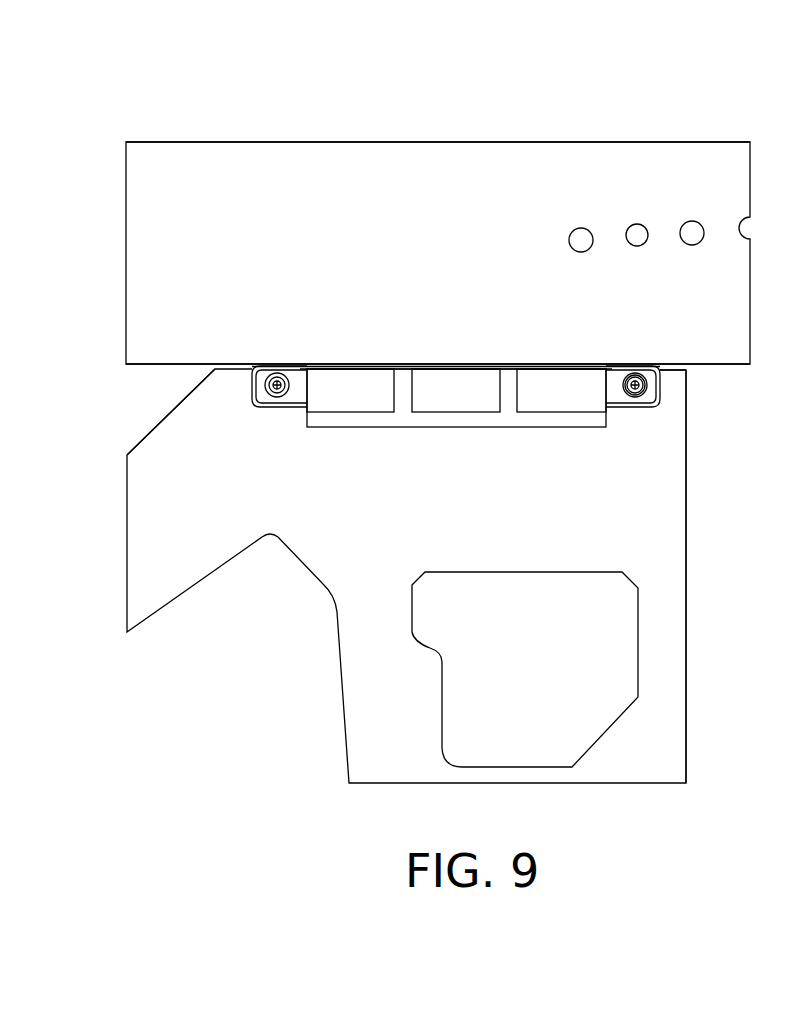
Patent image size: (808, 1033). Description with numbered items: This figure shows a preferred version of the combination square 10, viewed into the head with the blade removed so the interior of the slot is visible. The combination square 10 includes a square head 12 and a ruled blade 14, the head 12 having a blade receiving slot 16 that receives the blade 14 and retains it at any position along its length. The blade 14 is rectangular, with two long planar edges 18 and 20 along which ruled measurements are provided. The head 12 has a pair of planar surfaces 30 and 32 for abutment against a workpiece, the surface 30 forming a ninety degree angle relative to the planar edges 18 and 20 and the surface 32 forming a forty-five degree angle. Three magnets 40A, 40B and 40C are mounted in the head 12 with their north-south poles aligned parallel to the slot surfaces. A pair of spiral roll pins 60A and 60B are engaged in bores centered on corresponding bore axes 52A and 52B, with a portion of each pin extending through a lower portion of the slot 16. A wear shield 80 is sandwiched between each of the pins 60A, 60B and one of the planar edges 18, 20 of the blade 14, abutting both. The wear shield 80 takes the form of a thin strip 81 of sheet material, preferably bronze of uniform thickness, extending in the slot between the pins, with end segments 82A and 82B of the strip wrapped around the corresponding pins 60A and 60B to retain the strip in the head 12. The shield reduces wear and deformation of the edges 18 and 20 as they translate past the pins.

The combination square 10 is at (486, 92).
The square head 12 is at (340, 739).
The ruled blade 14 is at (672, 141).
The blade receiving slot 16 is at (694, 371).
The planar edge 18 is at (227, 142).
The planar edge 20 is at (227, 142).
The planar surface 30 is at (688, 693).
The planar surface 32 is at (137, 444).
The magnet 40A is at (369, 403).
The magnet 40B is at (478, 403).
The magnet 40C is at (582, 403).
The bore axis 52A is at (290, 383).
The bore axis 52B is at (632, 382).
The spiral roll pin 60A is at (270, 400).
The spiral roll pin 60B is at (638, 398).
The wear shield 80 is at (270, 362).
The thin strip 81 is at (626, 385).
The end segment 82A is at (250, 395).
The end segment 82B is at (662, 393).